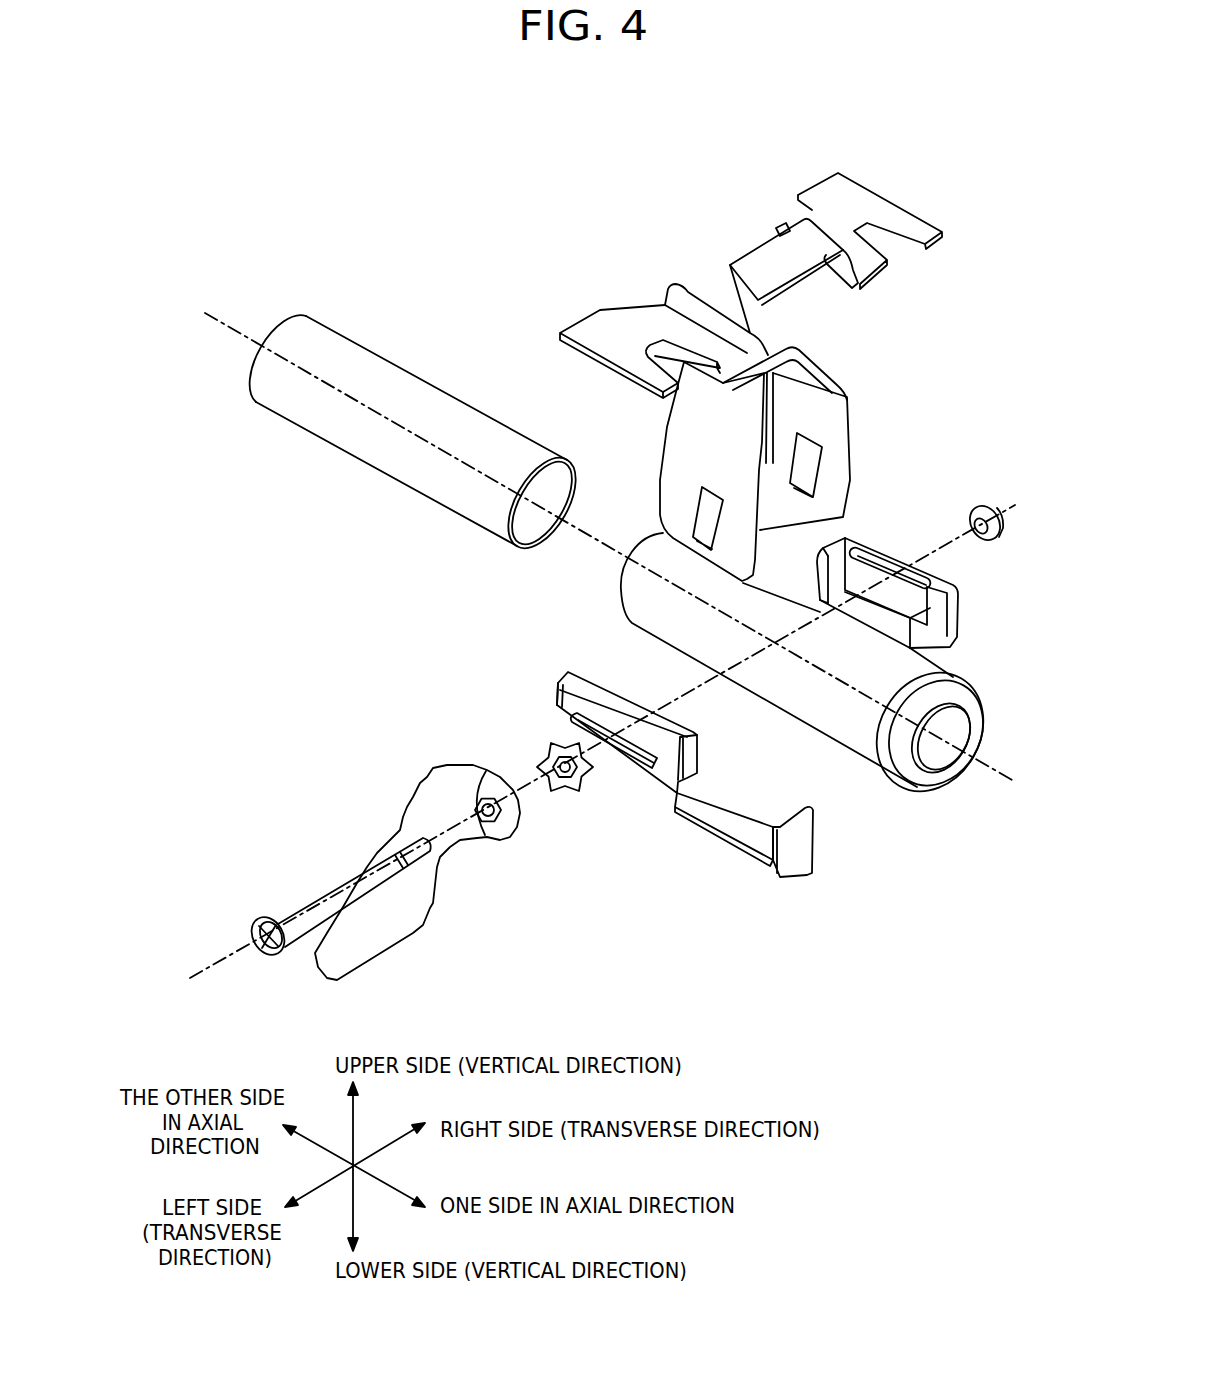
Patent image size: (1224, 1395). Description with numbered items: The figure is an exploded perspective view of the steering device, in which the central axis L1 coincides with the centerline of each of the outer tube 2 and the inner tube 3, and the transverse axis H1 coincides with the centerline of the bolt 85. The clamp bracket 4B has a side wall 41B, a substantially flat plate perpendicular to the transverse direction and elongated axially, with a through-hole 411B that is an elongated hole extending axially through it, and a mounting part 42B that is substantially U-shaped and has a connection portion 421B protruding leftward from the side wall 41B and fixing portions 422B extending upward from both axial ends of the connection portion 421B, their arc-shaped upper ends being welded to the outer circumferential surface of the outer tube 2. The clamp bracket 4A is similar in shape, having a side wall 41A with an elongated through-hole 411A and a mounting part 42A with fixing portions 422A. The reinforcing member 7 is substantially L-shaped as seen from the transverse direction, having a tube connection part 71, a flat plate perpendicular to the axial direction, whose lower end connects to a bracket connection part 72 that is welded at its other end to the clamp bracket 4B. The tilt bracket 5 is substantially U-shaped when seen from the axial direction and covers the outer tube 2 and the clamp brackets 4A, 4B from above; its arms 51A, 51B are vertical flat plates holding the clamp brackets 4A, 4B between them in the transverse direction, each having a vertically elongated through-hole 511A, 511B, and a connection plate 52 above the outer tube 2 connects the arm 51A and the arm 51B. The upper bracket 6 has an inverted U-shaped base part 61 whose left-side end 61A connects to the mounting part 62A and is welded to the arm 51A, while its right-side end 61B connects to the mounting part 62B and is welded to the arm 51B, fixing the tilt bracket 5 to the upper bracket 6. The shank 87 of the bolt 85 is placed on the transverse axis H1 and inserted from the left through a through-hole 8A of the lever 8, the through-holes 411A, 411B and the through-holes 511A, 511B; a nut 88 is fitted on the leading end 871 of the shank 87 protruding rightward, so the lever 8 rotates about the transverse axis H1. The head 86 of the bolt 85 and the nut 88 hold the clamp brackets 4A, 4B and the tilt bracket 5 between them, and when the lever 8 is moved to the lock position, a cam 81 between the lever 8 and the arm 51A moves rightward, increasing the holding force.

The central axis L1 is at (210, 306).
The transverse axis H1 is at (240, 950).
The outer tube 2 is at (645, 603).
The inner tube 3 is at (375, 365).
The clamp bracket 4A is at (600, 783).
The clamp bracket 4B is at (780, 678).
The side wall 41A is at (667, 721).
The side wall 41B is at (960, 602).
The through-hole 411A is at (617, 743).
The through-hole 411B is at (878, 566).
The mounting part 42A is at (600, 711).
The mounting part 42B is at (733, 710).
The connection portion 421B is at (877, 617).
The fixing portions 422A is at (560, 707).
The fixing portions 422B is at (813, 570).
The tilt bracket 5 is at (765, 453).
The arm 51A is at (697, 437).
The arm 51B is at (830, 428).
The through-hole 511A is at (707, 513).
The through-hole 511B is at (808, 463).
The connection plate 52 is at (808, 343).
The upper bracket 6 is at (769, 251).
The base part 61 is at (783, 253).
The left-side end 61A is at (730, 300).
The right-side end 61B is at (835, 280).
The mounting part 62A is at (615, 343).
The mounting part 62B is at (840, 230).
The reinforcing member 7 is at (744, 890).
The tube connection part 71 is at (803, 840).
The bracket connection part 72 is at (713, 812).
The lever 8 is at (417, 895).
The through-hole 8A is at (486, 840).
The cam 81 is at (587, 800).
The bolt 85 is at (333, 840).
The head 86 is at (260, 916).
The shank 87 is at (368, 868).
The leading end 871 is at (415, 808).
The nut 88 is at (986, 505).